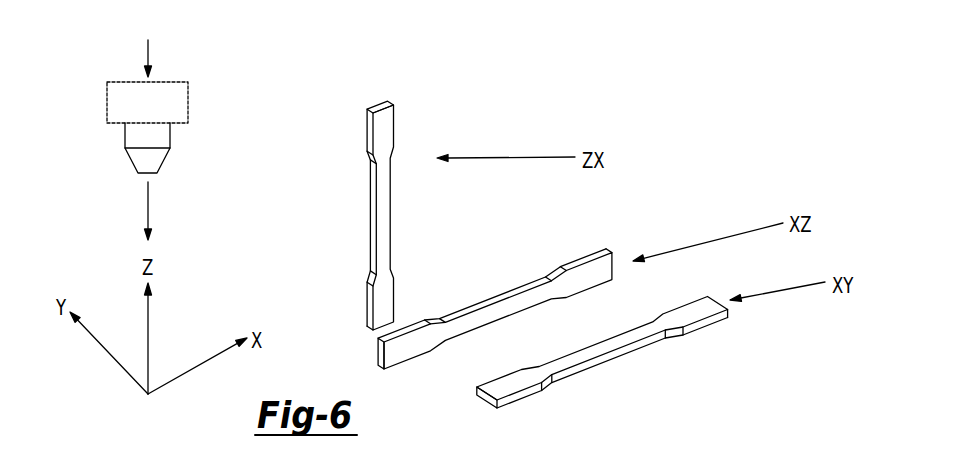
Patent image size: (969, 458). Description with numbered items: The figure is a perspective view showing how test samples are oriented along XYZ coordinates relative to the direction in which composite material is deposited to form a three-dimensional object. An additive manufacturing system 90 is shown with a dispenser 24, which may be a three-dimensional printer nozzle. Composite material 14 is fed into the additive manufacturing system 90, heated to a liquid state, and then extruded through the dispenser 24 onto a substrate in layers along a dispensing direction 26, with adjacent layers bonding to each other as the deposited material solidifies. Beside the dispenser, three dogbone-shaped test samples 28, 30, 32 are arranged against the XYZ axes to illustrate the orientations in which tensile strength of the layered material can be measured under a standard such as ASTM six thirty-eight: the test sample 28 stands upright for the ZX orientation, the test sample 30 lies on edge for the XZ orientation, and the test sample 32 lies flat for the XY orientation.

The composite material 14 is at (160, 38).
The additive manufacturing system 90 is at (107, 100).
The dispenser 24 is at (170, 137).
The dispensing direction 26 is at (148, 208).
The test sample 28 is at (390, 220).
The test sample 30 is at (503, 297).
The test sample 32 is at (607, 357).